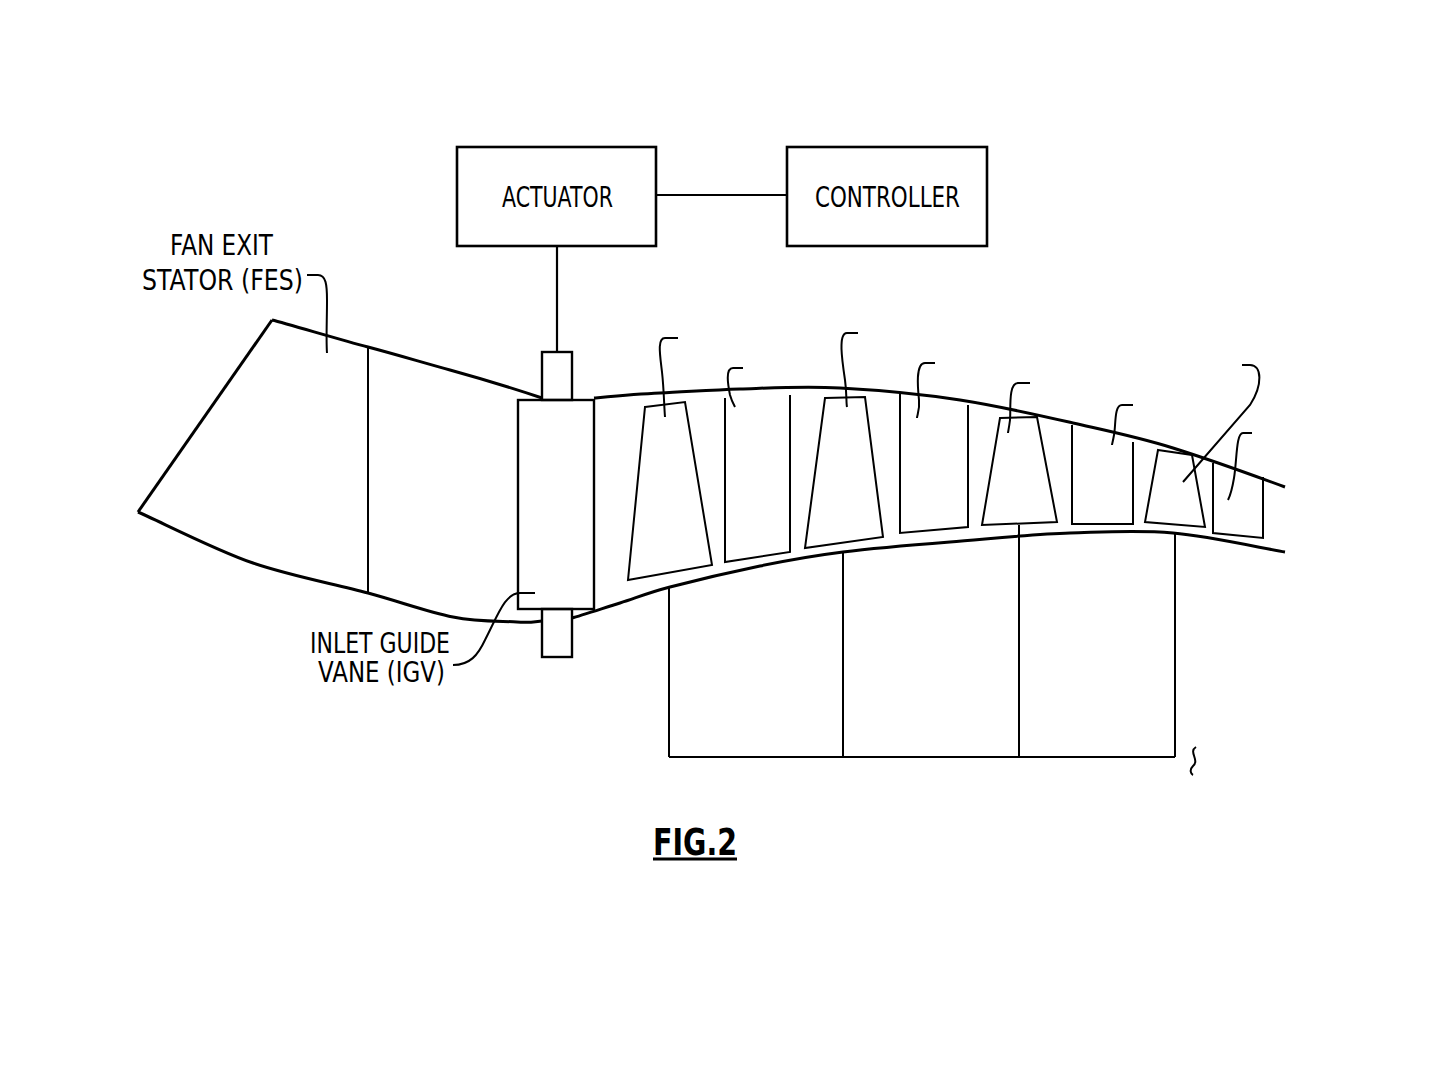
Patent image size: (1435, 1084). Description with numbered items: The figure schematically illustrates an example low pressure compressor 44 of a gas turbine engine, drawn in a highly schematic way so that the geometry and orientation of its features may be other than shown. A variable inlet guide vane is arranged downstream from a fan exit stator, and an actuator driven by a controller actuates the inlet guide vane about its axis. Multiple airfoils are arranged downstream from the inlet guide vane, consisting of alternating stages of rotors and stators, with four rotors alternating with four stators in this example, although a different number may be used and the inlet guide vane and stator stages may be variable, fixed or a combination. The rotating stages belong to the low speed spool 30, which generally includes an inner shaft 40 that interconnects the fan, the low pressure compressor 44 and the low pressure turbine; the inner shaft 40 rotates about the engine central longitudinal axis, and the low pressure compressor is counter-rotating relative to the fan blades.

The low speed spool 30 is at (932, 692).
The inner shaft 40 is at (1120, 757).
The low pressure compressor 44 is at (1054, 224).